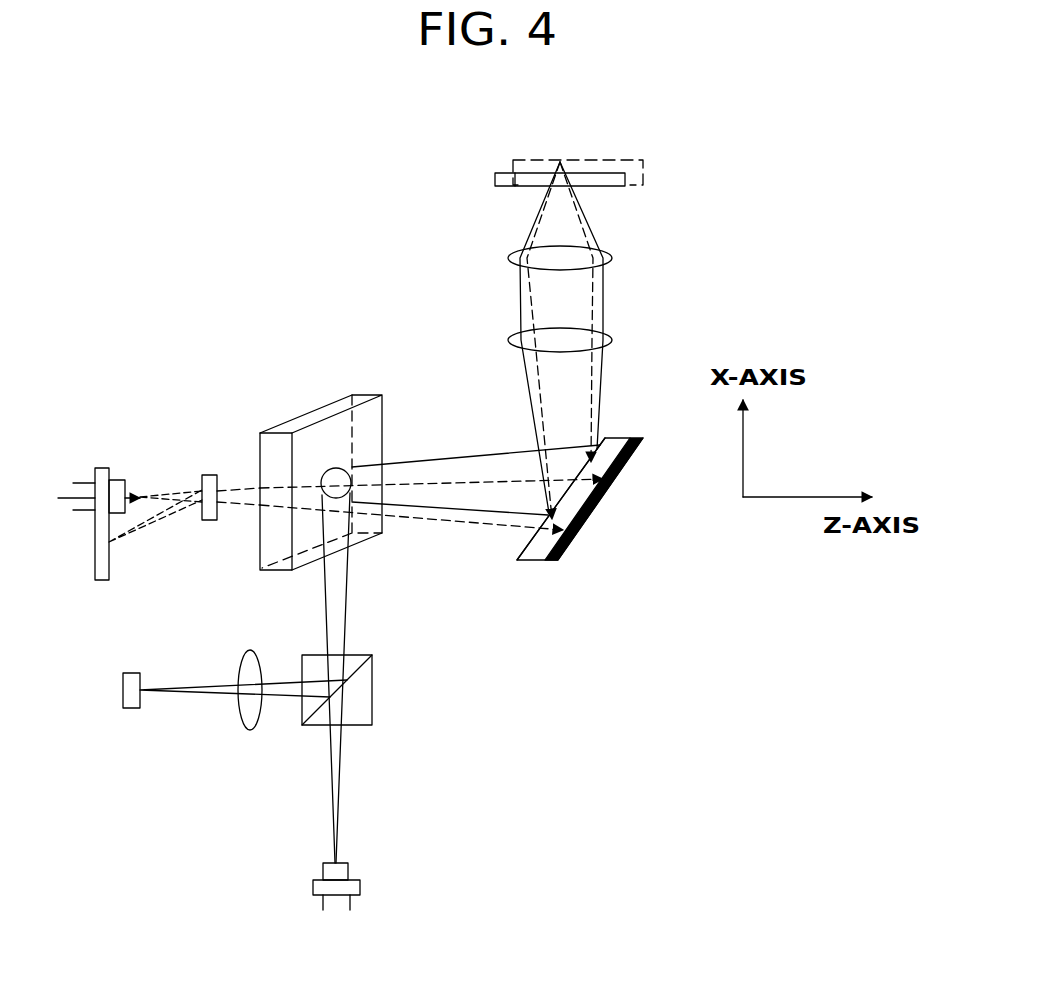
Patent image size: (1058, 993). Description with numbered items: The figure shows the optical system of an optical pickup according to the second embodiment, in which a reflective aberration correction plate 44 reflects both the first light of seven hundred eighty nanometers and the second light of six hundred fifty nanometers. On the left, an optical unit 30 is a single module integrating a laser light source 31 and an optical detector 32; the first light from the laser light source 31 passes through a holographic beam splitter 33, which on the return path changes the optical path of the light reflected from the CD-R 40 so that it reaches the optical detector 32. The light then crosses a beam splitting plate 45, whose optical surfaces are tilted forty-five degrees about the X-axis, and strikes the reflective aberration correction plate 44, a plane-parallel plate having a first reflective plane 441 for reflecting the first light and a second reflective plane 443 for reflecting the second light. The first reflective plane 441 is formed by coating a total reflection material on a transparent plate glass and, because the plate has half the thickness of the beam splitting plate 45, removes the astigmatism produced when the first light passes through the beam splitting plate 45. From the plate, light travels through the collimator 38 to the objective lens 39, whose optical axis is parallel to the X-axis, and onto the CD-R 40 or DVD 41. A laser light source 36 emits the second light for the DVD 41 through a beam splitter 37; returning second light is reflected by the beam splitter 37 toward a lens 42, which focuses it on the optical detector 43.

The optical unit 30 is at (108, 503).
The laser light source 31 is at (117, 478).
The optical detector 32 is at (110, 567).
The holographic beam splitter 33 is at (207, 475).
The laser light source 36 is at (360, 887).
The beam splitter 37 is at (373, 690).
The collimator 38 is at (612, 340).
The objective lens 39 is at (510, 258).
The CD-R 40 is at (610, 160).
The DVD 41 is at (508, 173).
The lens 42 is at (249, 650).
The optical detector 43 is at (132, 673).
The reflective aberration correction plate 44 is at (567, 503).
The first reflective plane 441 is at (637, 462).
The second reflective plane 443 is at (525, 540).
The beam splitting plate 45 is at (307, 412).